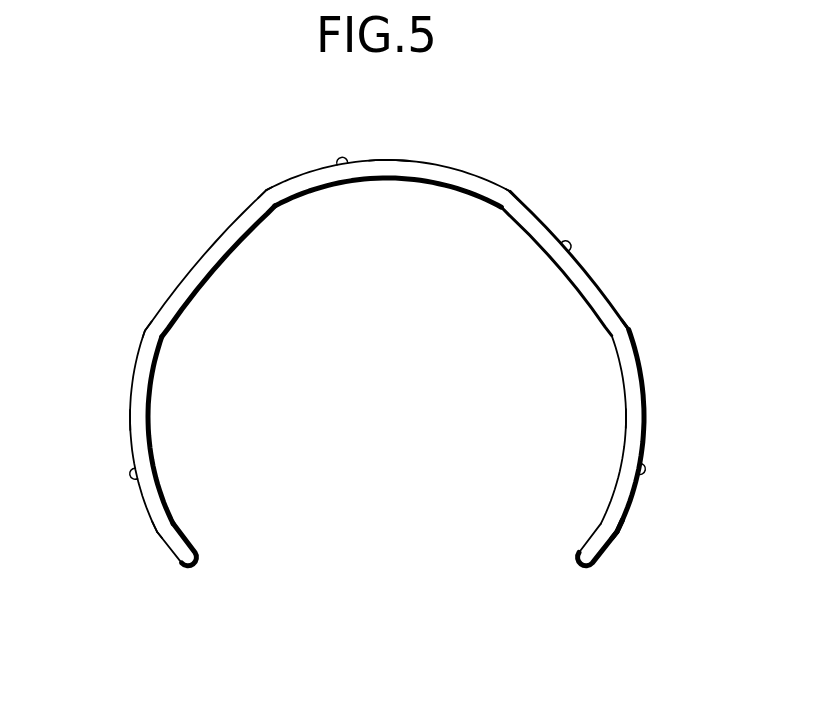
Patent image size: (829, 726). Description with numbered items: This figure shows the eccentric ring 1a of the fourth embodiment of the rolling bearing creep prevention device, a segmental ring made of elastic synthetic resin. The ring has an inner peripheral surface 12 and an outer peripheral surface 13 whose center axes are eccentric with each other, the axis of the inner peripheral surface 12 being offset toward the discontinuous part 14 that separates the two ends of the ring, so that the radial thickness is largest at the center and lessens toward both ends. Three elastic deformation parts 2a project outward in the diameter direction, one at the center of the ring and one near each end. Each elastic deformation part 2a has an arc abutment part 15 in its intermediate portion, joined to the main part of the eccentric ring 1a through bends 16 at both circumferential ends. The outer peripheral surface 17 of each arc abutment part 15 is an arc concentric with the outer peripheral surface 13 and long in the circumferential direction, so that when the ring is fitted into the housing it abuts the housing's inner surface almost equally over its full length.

The eccentric ring 1a is at (206, 301).
The elastic deformation part 2a is at (428, 162).
The inner peripheral surface 12 is at (242, 252).
The outer peripheral surface 13 is at (565, 248).
The discontinuous part 14 is at (197, 566).
The arc abutment part 15 is at (450, 185).
The bend 16 is at (264, 191).
The outer peripheral surface of the arc abutment part 17 is at (345, 169).